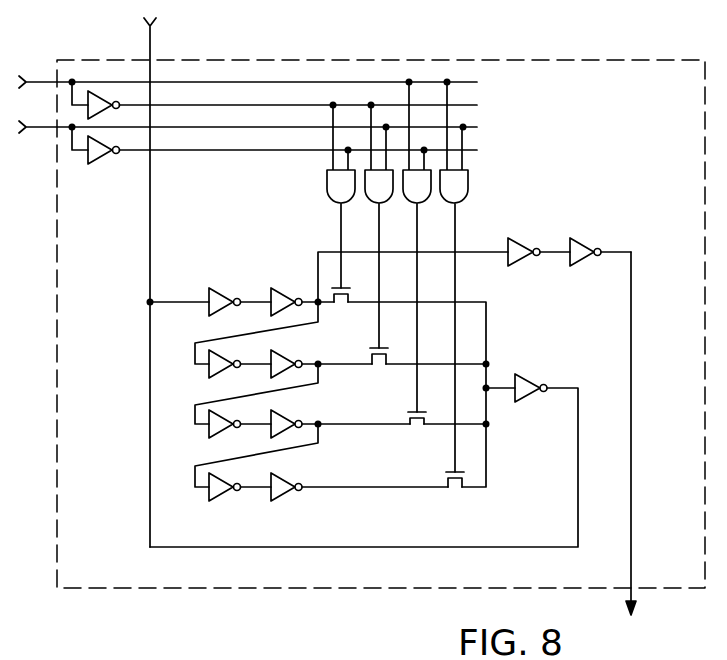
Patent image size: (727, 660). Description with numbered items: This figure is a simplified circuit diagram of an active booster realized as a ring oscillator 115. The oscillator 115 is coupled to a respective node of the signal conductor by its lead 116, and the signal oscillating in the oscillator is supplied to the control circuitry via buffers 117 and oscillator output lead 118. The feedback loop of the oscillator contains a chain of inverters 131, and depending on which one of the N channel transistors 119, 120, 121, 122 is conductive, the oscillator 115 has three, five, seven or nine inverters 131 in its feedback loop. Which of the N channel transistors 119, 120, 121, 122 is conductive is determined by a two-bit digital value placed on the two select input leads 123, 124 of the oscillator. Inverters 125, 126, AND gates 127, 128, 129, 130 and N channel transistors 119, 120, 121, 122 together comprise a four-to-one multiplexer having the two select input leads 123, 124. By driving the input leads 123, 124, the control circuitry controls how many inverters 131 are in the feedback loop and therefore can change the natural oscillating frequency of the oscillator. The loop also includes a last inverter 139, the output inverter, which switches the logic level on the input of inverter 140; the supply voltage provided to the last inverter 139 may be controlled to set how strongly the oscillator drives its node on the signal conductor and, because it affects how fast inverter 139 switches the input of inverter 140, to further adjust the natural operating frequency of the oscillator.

The oscillator 115 is at (639, 60).
The lead 116 is at (152, 46).
The buffers 117 is at (580, 238).
The oscillator output lead 118 is at (634, 594).
The N channel transistor 119 is at (341, 309).
The N channel transistor 120 is at (378, 367).
The N channel transistor 121 is at (418, 428).
The N channel transistor 122 is at (456, 491).
The select input lead 123 is at (34, 80).
The select input lead 124 is at (34, 129).
The inverter 125 is at (96, 90).
The inverter 126 is at (100, 162).
The AND gate 127 is at (328, 196).
The AND gate 128 is at (362, 197).
The AND gate 129 is at (402, 197).
The AND gate 130 is at (466, 197).
The inverters 131 is at (270, 293).
The last inverter 139 is at (522, 404).
The inverter 140 is at (211, 310).